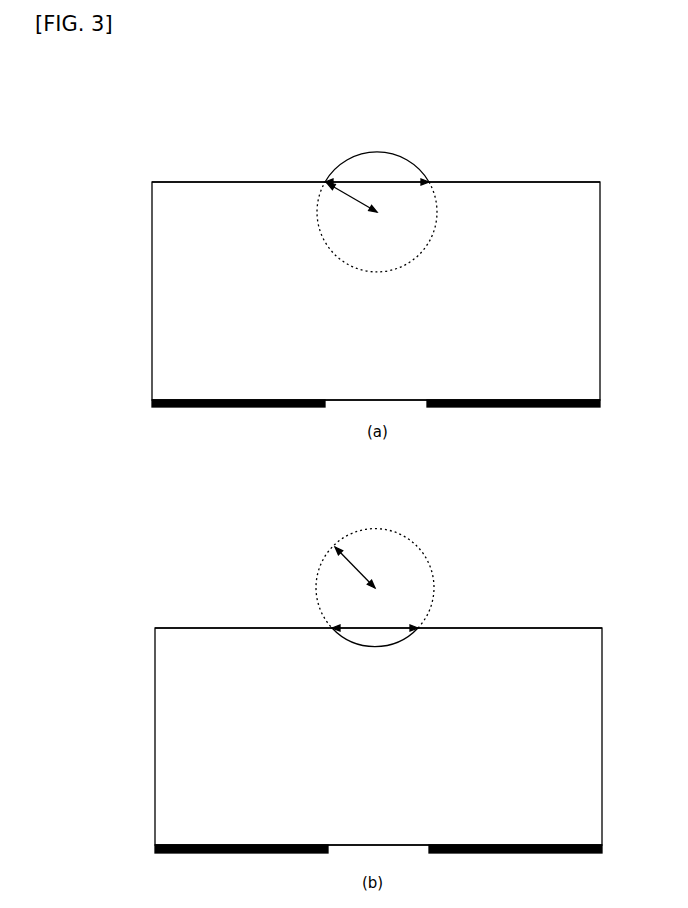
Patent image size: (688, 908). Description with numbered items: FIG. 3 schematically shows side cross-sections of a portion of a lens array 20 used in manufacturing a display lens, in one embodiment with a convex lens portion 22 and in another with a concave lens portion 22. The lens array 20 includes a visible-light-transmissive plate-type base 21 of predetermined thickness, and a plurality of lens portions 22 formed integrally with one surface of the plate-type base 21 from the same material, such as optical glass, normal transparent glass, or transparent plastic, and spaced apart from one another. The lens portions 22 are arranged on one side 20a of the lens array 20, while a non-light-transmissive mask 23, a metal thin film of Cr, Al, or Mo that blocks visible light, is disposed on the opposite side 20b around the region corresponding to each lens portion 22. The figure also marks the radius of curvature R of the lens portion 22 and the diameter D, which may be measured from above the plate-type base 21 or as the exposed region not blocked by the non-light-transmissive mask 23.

The lens array 20 is at (160, 114).
The side on which the lens portions are arranged 20a is at (212, 184).
The side opposite to the lens portions 20b is at (278, 399).
The plate-type base 21 is at (152, 308).
The lens portion 22 is at (348, 156).
The non-light-transmissive mask 23 is at (229, 406).